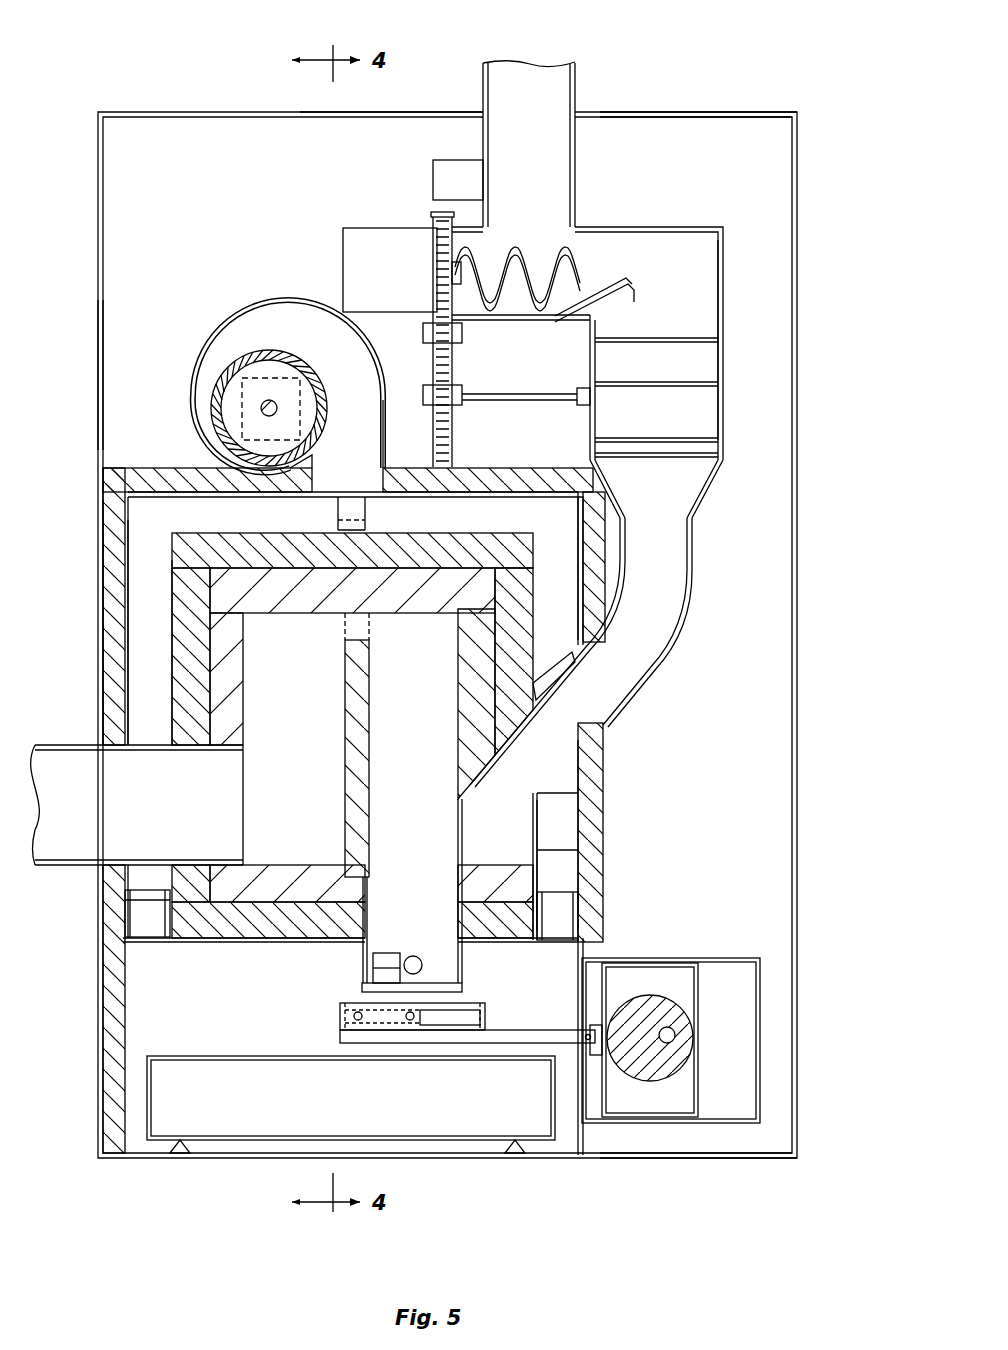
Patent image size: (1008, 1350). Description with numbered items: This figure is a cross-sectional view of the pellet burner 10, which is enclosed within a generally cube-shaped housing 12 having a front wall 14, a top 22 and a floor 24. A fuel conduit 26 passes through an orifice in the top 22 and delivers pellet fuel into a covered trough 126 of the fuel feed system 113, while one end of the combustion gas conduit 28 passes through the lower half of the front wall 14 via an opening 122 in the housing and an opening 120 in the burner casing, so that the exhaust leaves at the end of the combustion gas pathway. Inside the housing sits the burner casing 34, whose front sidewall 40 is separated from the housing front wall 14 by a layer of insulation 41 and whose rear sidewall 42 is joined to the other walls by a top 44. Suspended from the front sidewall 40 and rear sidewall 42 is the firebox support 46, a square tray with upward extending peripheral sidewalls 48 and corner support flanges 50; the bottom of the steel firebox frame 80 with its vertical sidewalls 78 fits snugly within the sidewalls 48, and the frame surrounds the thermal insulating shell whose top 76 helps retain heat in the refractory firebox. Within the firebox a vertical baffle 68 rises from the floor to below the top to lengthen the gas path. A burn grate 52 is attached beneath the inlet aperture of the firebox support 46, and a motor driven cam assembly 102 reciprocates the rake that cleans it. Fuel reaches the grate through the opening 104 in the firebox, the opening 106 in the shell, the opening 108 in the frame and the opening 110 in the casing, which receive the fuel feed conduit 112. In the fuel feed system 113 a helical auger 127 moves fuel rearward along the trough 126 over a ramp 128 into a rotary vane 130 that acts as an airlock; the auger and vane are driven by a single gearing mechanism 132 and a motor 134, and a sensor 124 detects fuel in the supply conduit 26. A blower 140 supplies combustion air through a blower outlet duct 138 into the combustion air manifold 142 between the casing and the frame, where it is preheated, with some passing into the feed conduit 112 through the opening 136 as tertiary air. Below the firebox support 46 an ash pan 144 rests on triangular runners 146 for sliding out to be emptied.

The pellet burner 10 is at (127, 72).
The housing 12 is at (98, 236).
The front wall 14 is at (98, 372).
The top 22 is at (722, 112).
The floor 24 is at (705, 1160).
The fuel conduit 26 is at (578, 82).
The combustion gas conduit 28 is at (55, 745).
The burner casing 34 is at (167, 418).
The front sidewall 40 is at (128, 540).
The insulation 41 is at (150, 468).
The rear sidewall 42 is at (590, 880).
The top 44 is at (483, 470).
The firebox support 46 is at (515, 942).
The peripheral sidewalls 48 is at (555, 905).
The support flanges 50 is at (555, 930).
The burn grate 52 is at (317, 984).
The vertical baffle 68 is at (342, 735).
The top 76 is at (400, 540).
The vertical sidewalls 78 is at (172, 600).
The firebox frame 80 is at (544, 820).
The motor driven cam assembly 102 is at (689, 953).
The opening 104 is at (470, 770).
The opening 106 is at (470, 710).
The opening 108 is at (560, 790).
The opening 110 is at (603, 725).
The fuel feed conduit 112 is at (680, 640).
The fuel feed system 113 is at (721, 202).
The opening 120 is at (138, 745).
The opening 122 is at (85, 745).
The sensor 124 is at (435, 180).
The trough 126 is at (597, 216).
The helical auger 127 is at (590, 277).
The ramp 128 is at (632, 322).
The rotary vane 130 is at (728, 404).
The gearing mechanism 132 is at (466, 371).
The motor 134 is at (345, 250).
The opening 136 is at (580, 690).
The blower outlet duct 138 is at (338, 492).
The blower 140 is at (248, 312).
The combustion air manifold 142 is at (515, 515).
The ash pan 144 is at (420, 1125).
The triangular runners 146 is at (500, 1152).